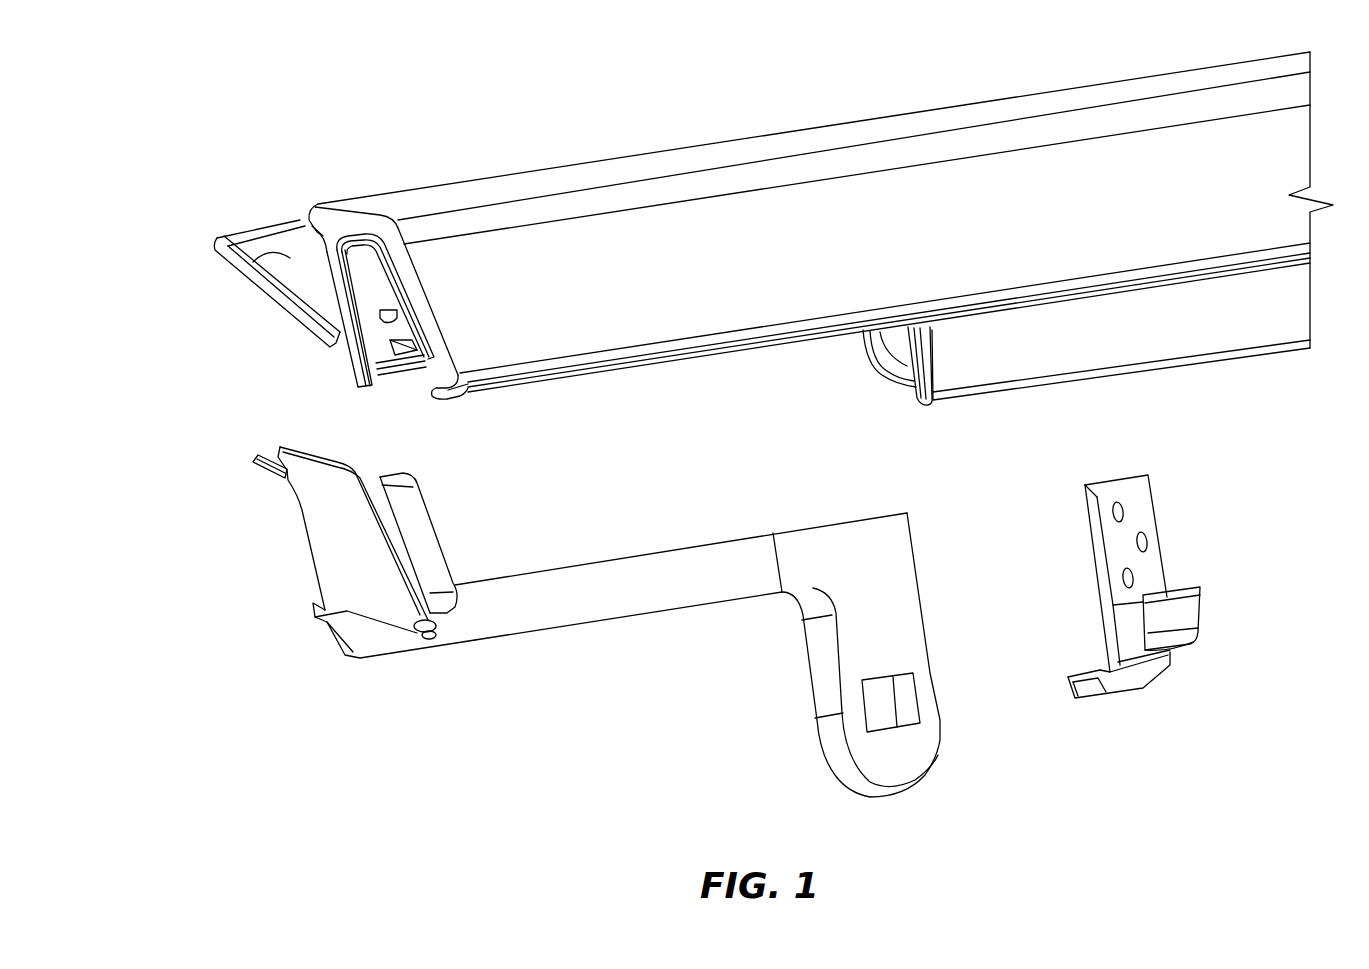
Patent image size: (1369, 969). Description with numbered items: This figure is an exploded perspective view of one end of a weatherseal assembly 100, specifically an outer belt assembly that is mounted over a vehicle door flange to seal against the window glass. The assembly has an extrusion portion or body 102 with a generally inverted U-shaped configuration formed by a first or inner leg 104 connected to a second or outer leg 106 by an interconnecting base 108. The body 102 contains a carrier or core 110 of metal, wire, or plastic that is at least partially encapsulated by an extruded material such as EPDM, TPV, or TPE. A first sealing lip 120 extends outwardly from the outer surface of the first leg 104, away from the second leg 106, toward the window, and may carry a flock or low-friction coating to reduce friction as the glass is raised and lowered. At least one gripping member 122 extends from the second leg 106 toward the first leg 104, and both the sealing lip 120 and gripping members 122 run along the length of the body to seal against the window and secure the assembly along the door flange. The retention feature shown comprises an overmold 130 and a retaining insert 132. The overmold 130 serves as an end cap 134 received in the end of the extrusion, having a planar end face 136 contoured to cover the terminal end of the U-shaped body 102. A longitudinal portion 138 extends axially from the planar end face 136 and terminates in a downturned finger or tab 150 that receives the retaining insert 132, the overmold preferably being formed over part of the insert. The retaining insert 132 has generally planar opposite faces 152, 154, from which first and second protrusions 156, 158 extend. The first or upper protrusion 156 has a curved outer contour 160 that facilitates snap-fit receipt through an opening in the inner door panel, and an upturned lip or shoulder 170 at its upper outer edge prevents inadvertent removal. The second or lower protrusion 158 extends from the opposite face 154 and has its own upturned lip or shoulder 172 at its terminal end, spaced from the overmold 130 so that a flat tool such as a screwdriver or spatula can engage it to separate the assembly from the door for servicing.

The weatherseal assembly 100 is at (182, 230).
The extrusion portion or body 102 is at (548, 173).
The first or inner leg 104 is at (360, 367).
The second or outer leg 106 is at (592, 342).
The interconnecting base 108 is at (318, 208).
The carrier or core 110 is at (415, 368).
The first sealing lip 120 is at (285, 297).
The gripping member 122 is at (357, 355).
The overmold 130 is at (703, 541).
The retaining insert 132 is at (1162, 541).
The end cap 134 is at (465, 648).
The planar end face 136 is at (325, 537).
The longitudinal portion 138 is at (547, 617).
The downturned finger or tab 150 is at (833, 745).
The planar face 152 is at (1143, 500).
The opposite face 154 is at (1083, 517).
The first or upper protrusion 156 is at (1192, 615).
The second or lower protrusion 158 is at (1082, 703).
The curved outer contour 160 is at (1153, 647).
The upturned lip or shoulder 170 is at (1187, 583).
The upturned lip or shoulder 172 is at (1075, 676).